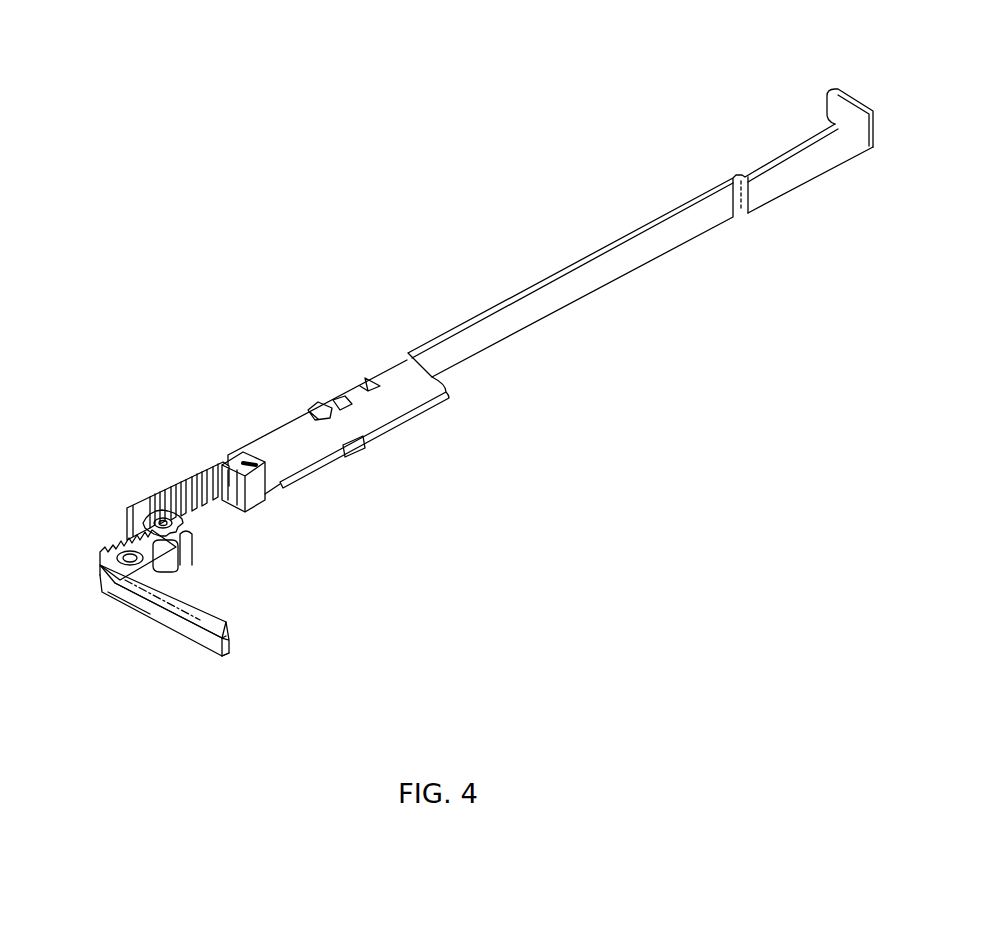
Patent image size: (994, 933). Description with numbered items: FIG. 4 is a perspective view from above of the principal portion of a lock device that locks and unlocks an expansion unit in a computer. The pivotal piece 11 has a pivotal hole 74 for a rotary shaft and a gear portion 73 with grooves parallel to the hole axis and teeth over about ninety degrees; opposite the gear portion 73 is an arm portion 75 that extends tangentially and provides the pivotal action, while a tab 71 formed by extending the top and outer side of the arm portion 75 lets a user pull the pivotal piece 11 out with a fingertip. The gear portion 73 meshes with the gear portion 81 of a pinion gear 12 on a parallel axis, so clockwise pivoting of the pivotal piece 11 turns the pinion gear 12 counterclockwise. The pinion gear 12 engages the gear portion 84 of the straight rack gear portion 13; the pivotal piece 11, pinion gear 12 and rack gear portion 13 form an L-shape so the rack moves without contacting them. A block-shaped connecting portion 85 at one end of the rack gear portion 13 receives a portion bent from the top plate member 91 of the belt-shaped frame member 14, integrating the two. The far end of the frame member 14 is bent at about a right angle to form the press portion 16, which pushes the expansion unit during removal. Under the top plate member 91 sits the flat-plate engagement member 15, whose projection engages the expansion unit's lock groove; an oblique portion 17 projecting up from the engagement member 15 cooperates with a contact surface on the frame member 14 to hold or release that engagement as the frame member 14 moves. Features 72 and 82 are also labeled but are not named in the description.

The pivotal piece 11 is at (175, 627).
The pinion gear 12 is at (192, 530).
The rack gear portion 13 is at (172, 490).
The frame member 14 is at (670, 235).
The engagement member 15 is at (320, 402).
The press portion 16 is at (842, 108).
The oblique portion 17 is at (340, 400).
The tab 71 is at (228, 648).
The lever arm portion 72 is at (187, 600).
The gear portion 73 is at (112, 540).
The pivotal hole 74 is at (123, 558).
The arm portion 75 is at (142, 607).
The gear portion 81 is at (192, 553).
The gear shaft 82 is at (160, 513).
The gear portion 84 is at (212, 473).
The connecting portion 85 is at (237, 500).
The top plate member 91 is at (408, 398).